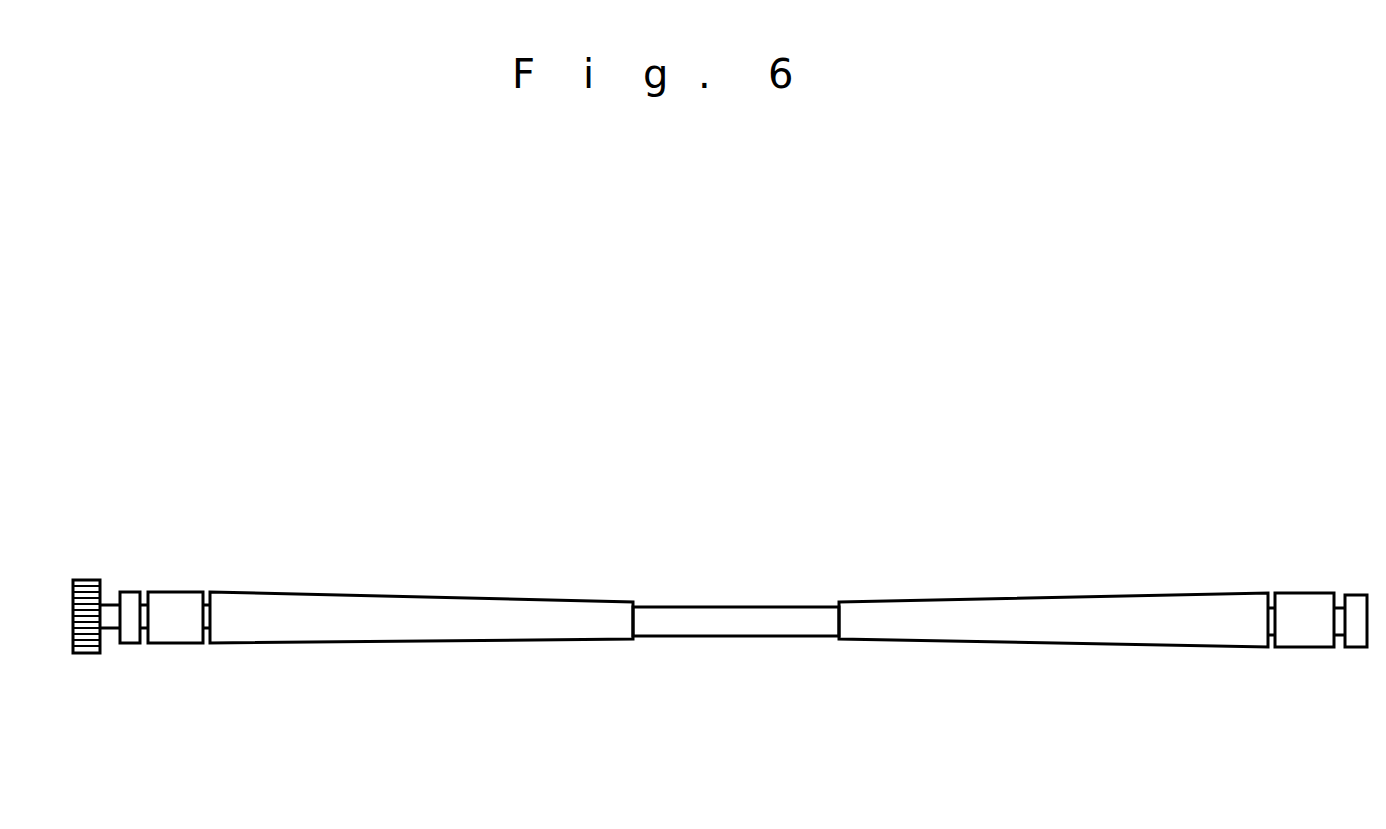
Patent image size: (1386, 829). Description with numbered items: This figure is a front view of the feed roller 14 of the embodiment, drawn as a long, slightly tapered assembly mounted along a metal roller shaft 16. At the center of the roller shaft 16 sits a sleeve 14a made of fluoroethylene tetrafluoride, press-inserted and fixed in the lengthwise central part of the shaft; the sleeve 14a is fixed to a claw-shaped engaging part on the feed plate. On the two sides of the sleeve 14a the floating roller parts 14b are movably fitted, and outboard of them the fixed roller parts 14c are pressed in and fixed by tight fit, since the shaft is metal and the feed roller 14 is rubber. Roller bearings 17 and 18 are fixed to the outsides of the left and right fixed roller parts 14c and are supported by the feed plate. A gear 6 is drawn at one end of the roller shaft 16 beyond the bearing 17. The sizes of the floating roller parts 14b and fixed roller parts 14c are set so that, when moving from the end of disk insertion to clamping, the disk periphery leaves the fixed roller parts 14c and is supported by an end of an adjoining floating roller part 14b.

The gear 6 is at (93, 653).
The feed roller 14 is at (742, 488).
The sleeve 14a is at (712, 615).
The floating roller parts 14b is at (373, 605).
The fixed roller parts 14c is at (177, 598).
The roller shaft 16 is at (102, 623).
The roller bearing 17 is at (127, 596).
The roller bearing 18 is at (1352, 600).